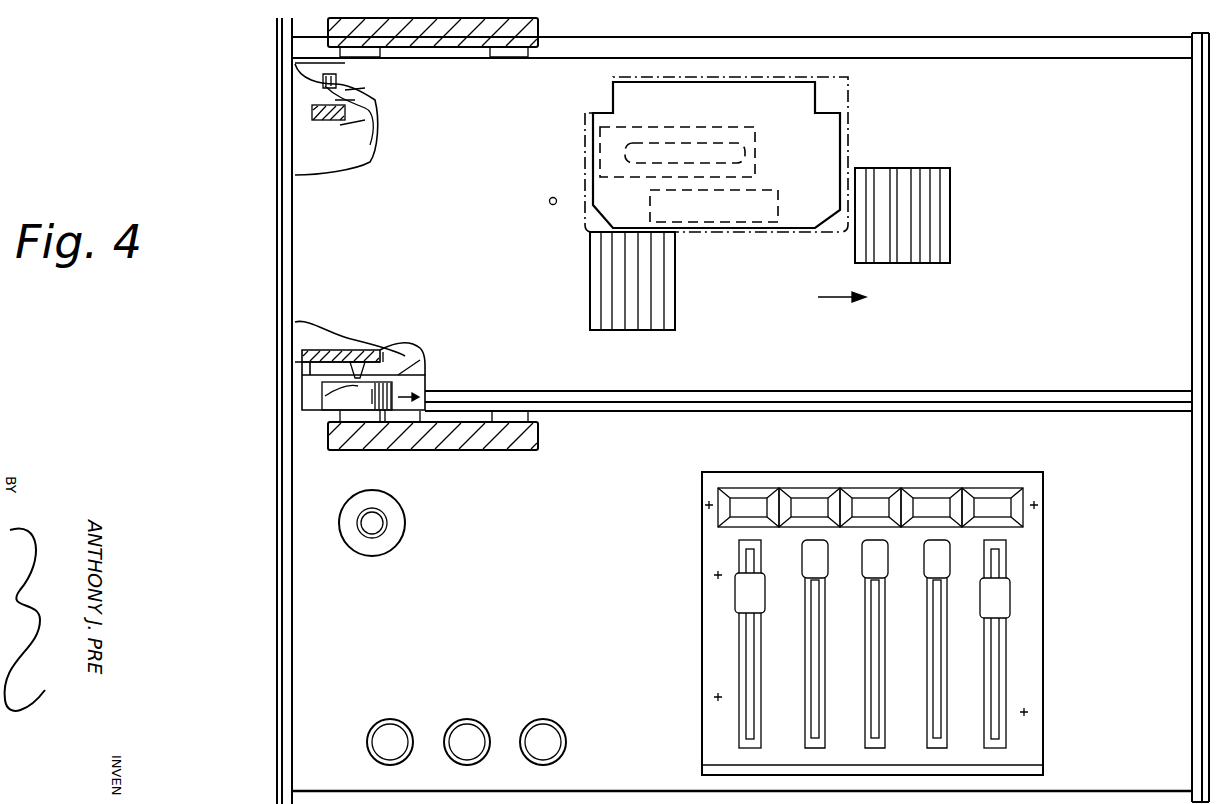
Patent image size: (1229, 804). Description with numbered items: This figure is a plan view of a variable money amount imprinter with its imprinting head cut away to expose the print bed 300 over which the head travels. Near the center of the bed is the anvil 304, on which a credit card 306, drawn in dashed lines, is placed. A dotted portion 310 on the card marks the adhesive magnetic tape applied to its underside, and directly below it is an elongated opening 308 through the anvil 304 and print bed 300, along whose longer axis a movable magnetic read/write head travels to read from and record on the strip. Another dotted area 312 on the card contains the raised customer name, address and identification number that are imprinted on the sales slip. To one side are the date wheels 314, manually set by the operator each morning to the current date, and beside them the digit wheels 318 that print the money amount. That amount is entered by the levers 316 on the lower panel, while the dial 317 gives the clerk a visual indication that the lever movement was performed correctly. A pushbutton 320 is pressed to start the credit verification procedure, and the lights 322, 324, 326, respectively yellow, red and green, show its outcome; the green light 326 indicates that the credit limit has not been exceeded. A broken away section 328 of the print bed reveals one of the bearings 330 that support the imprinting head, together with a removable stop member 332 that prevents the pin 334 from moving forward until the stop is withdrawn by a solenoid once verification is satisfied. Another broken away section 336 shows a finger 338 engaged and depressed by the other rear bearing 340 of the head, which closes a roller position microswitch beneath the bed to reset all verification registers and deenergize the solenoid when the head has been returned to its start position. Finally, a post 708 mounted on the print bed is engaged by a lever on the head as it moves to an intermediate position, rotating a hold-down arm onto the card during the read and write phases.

The print bed 300 is at (1085, 297).
The anvil 304 is at (716, 155).
The credit card 306 is at (655, 77).
The opening 308 is at (683, 140).
The magnetic tape portion 310 is at (755, 146).
The dotted area 312 is at (715, 230).
The date wheels 314 is at (570, 304).
The levers 316 is at (1043, 652).
The dial 317 is at (1025, 491).
The digit wheels 318 is at (1017, 219).
The pushbutton 320 is at (392, 514).
The yellow light 322 is at (382, 748).
The red light 324 is at (472, 745).
The green light 326 is at (552, 743).
The broken away section of the print bed 328 is at (430, 303).
The bearing 330 is at (330, 400).
The removable stop member 332 is at (398, 358).
The pin 334 is at (333, 350).
The broken away section of the print bed 336 is at (478, 123).
The finger 338 is at (316, 116).
The rear bearing 340 is at (320, 80).
The post 708 is at (548, 200).